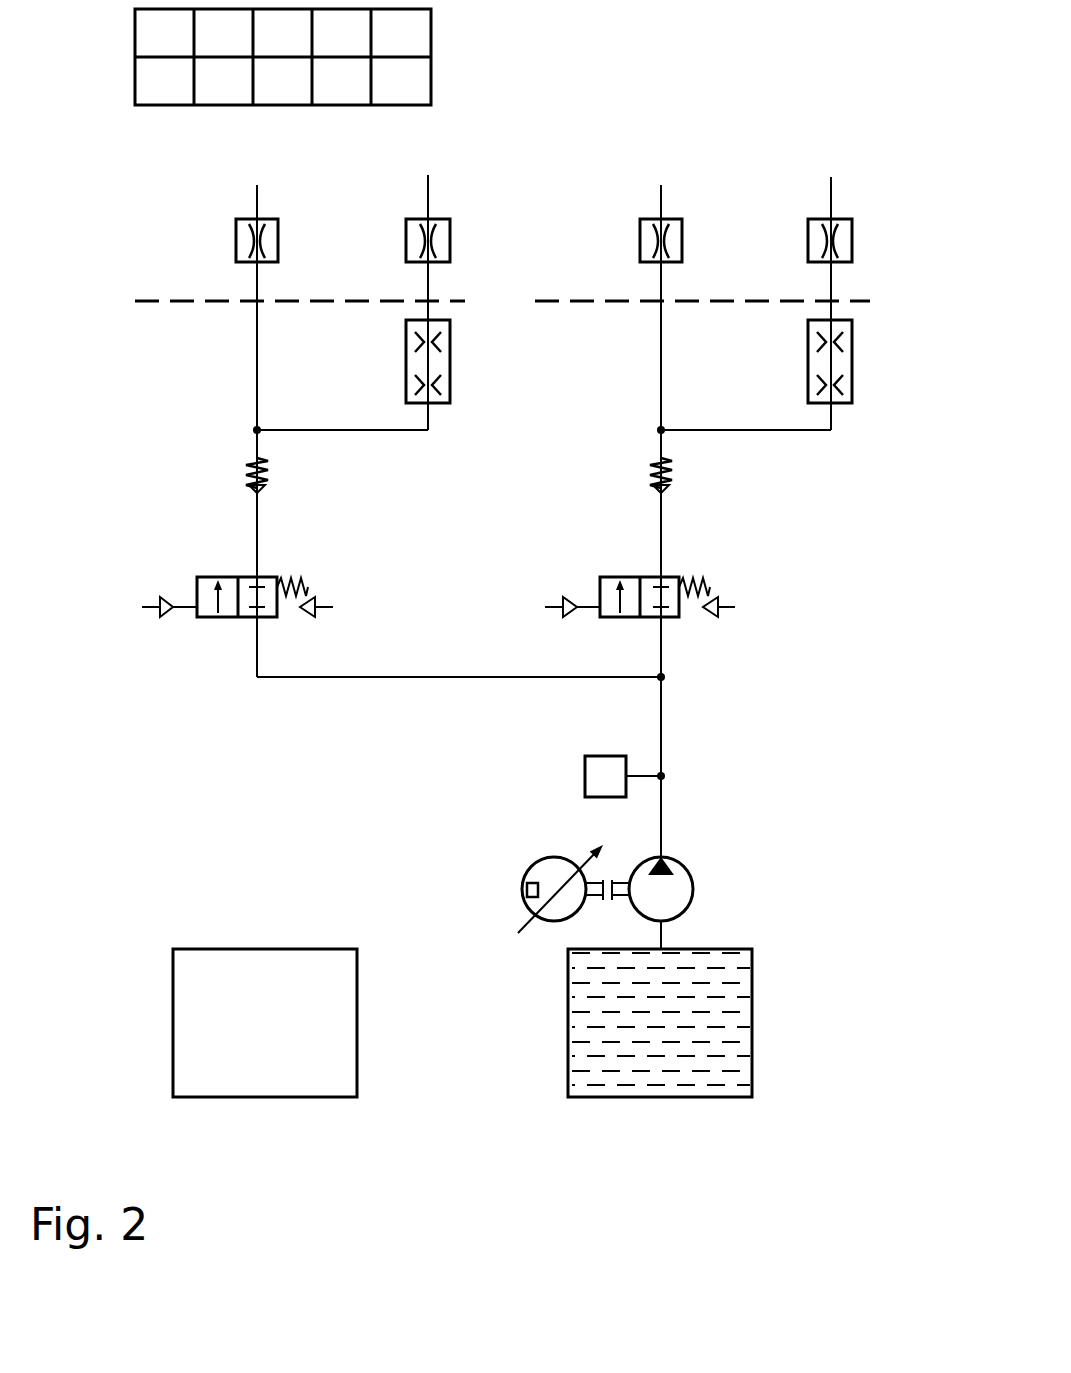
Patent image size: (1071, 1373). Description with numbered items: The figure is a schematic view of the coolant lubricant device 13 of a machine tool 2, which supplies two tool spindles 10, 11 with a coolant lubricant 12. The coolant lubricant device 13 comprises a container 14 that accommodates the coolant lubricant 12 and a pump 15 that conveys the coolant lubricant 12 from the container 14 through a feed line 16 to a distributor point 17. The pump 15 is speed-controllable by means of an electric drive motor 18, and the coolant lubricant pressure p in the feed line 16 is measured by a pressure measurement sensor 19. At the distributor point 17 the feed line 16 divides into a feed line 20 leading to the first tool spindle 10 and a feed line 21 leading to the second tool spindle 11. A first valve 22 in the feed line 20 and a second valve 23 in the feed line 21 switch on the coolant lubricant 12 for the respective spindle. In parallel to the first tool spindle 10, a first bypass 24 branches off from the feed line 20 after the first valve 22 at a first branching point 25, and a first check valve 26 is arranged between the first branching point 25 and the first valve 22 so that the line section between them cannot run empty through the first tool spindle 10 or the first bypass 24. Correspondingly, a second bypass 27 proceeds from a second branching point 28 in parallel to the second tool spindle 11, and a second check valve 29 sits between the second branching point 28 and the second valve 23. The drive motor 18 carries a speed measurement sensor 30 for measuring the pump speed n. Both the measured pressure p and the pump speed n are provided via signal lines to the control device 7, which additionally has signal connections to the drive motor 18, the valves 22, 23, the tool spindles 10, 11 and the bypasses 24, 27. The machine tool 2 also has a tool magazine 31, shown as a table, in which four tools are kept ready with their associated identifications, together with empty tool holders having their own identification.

The machine tool 2 is at (533, 188).
The control device 7 is at (187, 1022).
The first tool spindle 10 is at (180, 243).
The second tool spindle 11 is at (712, 220).
The coolant lubricant 12 is at (713, 982).
The coolant lubricant device 13 is at (706, 726).
The container 14 is at (752, 1048).
The pump 15 is at (680, 889).
The feed line 16 is at (661, 736).
The distributor point 17 is at (661, 677).
The electric drive motor 18 is at (553, 913).
The pressure measurement sensor 19 is at (585, 785).
The feed line 20 is at (291, 677).
The feed line 21 is at (661, 633).
The first valve 22 is at (205, 582).
The second valve 23 is at (680, 573).
The first bypass 24 is at (291, 430).
The first branching point 25 is at (257, 430).
The first check valve 26 is at (250, 487).
The second bypass 27 is at (831, 282).
The second branching point 28 is at (661, 431).
The second check valve 29 is at (672, 468).
The speed measurement sensor 30 is at (527, 891).
The tool magazine 31 is at (118, 44).